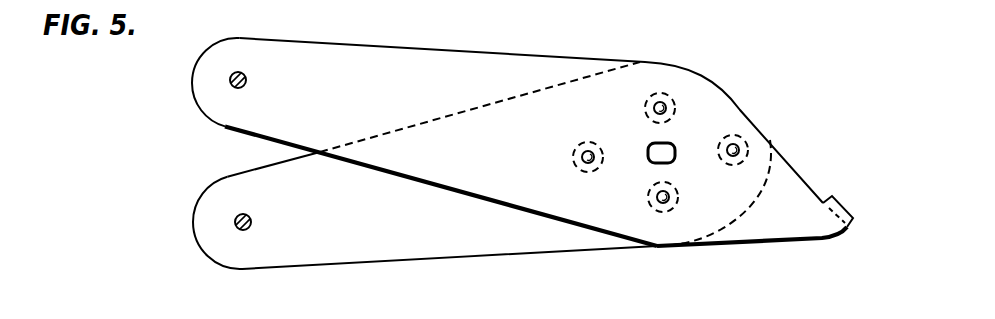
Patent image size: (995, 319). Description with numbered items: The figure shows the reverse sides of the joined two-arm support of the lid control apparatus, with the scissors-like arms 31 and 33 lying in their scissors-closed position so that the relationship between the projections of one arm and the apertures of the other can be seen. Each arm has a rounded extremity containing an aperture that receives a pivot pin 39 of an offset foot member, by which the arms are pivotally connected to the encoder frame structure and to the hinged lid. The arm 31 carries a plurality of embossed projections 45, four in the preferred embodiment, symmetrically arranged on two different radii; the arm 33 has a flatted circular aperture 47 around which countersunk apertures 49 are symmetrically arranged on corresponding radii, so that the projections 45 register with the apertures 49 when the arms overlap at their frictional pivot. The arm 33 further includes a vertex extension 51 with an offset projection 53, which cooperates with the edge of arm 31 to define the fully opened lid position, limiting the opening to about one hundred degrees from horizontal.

The arm 31 is at (361, 238).
The arm 33 is at (387, 95).
The pivot pin 39 is at (246, 73).
The embossed projection 45 is at (657, 102).
The flatted circular aperture 47 is at (676, 156).
The countersunk aperture 49 is at (675, 104).
The vertex extension 51 is at (788, 232).
The offset projection 53 is at (848, 205).